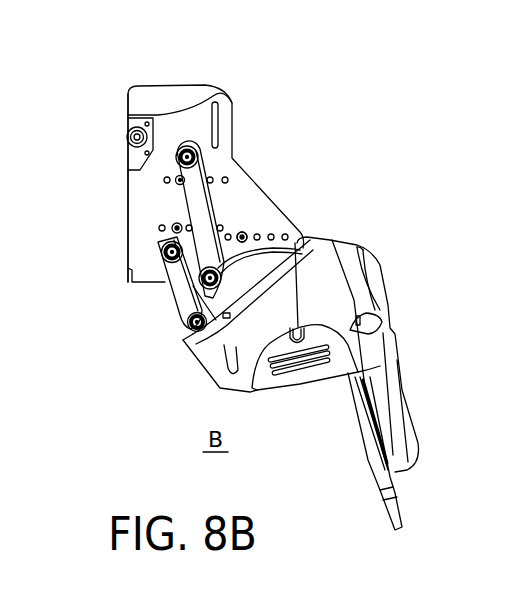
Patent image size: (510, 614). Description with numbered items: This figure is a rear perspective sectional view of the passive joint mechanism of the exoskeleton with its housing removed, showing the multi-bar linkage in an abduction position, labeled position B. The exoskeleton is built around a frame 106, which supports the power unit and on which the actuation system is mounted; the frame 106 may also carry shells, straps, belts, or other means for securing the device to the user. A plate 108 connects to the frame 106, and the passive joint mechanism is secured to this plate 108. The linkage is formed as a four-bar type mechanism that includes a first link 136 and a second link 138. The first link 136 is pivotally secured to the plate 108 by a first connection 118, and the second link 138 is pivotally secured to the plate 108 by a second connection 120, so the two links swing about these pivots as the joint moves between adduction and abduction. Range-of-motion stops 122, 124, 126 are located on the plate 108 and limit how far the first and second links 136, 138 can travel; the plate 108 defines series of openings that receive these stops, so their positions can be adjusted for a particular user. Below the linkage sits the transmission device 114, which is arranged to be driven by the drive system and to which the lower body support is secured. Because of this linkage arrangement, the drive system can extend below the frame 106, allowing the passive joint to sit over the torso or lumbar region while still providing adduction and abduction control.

The frame 106 is at (240, 100).
The plate 108 is at (143, 207).
The transmission device 114 is at (385, 252).
The first connection 118 is at (130, 140).
The second connection 120 is at (186, 294).
The range-of-motion stop 122 is at (164, 180).
The range-of-motion stop 124 is at (163, 231).
The range-of-motion stop 126 is at (246, 235).
The first link 136 is at (197, 203).
The second link 138 is at (176, 300).